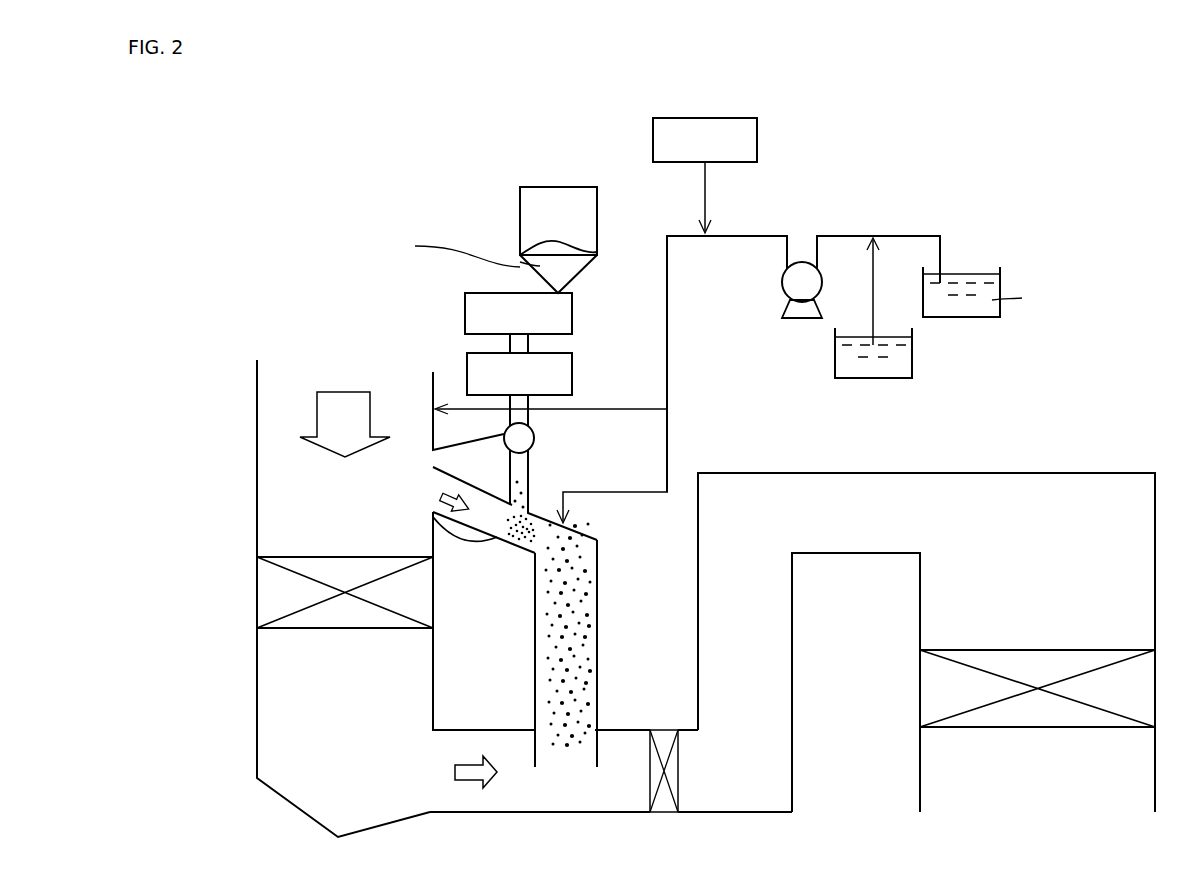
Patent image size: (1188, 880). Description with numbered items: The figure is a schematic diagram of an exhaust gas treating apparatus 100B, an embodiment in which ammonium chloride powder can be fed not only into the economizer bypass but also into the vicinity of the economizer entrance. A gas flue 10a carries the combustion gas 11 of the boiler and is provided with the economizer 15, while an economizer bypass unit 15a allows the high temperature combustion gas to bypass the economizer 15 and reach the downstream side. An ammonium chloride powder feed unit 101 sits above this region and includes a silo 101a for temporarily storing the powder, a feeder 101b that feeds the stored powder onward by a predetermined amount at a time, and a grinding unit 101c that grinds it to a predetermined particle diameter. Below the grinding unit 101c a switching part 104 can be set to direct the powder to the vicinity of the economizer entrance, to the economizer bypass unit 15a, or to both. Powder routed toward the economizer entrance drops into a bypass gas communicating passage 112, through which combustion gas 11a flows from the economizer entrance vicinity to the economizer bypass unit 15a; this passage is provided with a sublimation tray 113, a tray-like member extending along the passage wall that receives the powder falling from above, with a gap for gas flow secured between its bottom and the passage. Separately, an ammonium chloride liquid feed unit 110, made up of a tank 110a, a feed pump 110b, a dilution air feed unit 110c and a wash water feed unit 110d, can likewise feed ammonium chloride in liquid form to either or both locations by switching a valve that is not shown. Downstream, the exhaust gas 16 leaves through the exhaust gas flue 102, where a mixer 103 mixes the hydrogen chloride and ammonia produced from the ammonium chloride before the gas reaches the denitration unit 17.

The exhaust gas treating apparatus 100B is at (1006, 182).
The gas flue 10a is at (433, 393).
The combustion gas 11 is at (257, 408).
The combustion gas 11a is at (442, 496).
The economizer 15 is at (257, 580).
The economizer bypass unit 15a is at (540, 653).
The exhaust gas 16 is at (468, 782).
The denitration unit 17 is at (920, 727).
The ammonium chloride powder feed unit 101 is at (423, 263).
The silo 101a is at (560, 187).
The feeder 101b is at (465, 318).
The grinding unit 101c is at (467, 362).
The exhaust gas flue 102 is at (553, 813).
The mixer 103 is at (665, 813).
The switching part 104 is at (535, 440).
The ammonium chloride liquid feed unit 110 is at (814, 320).
The tank 110a is at (972, 317).
The feed pump 110b is at (785, 282).
The dilution air feed unit 110c is at (757, 137).
The wash water feed unit 110d is at (912, 365).
The bypass gas communicating passage 112 is at (519, 546).
The sublimation tray 113 is at (433, 530).